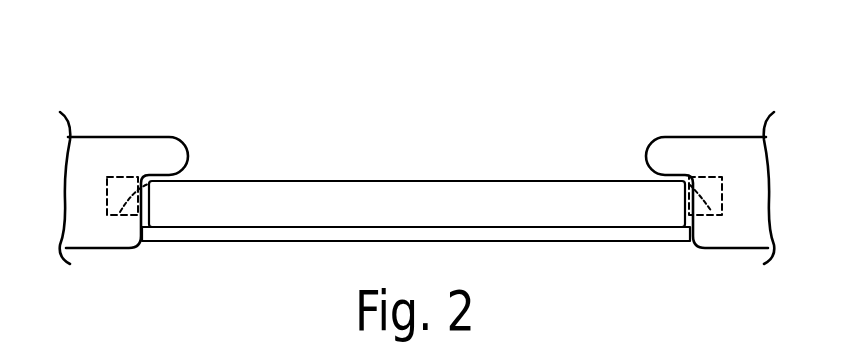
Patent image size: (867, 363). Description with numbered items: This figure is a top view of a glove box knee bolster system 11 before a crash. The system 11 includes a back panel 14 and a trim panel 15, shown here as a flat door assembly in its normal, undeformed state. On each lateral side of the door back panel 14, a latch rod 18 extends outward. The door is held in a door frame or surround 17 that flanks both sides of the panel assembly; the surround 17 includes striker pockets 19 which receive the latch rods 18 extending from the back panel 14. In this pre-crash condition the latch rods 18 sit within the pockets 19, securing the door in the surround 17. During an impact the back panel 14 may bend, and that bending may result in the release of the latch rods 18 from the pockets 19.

The glove box knee bolster system 11 is at (381, 151).
The back panel 14 is at (522, 180).
The trim panel 15 is at (642, 242).
The door frame or surround 17 is at (90, 137).
The latch rods 18 is at (141, 187).
The striker pockets 19 is at (108, 208).